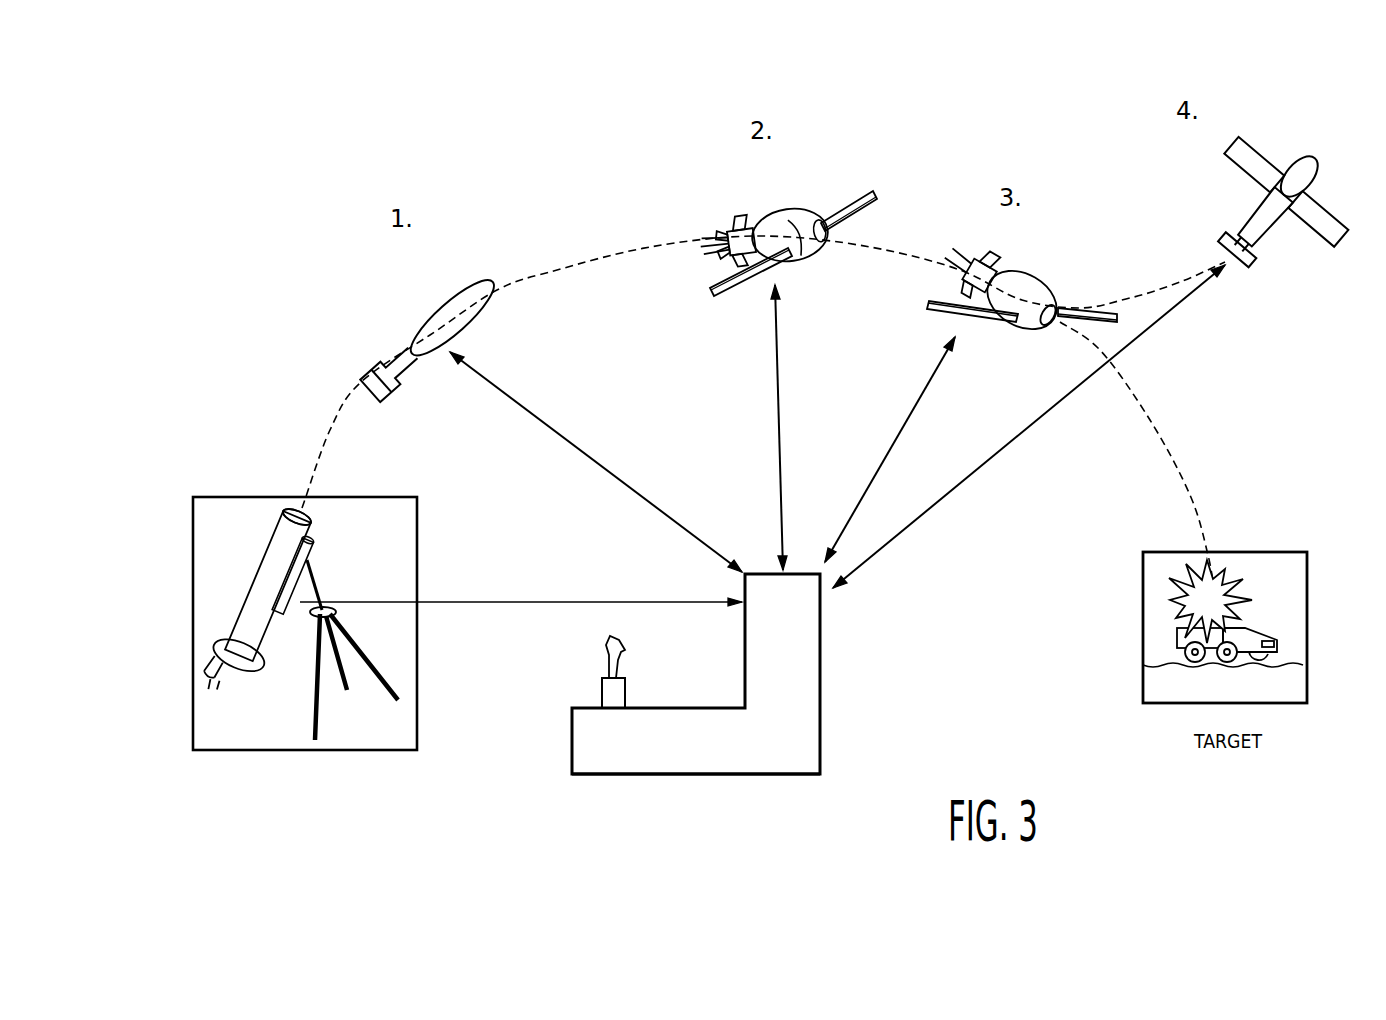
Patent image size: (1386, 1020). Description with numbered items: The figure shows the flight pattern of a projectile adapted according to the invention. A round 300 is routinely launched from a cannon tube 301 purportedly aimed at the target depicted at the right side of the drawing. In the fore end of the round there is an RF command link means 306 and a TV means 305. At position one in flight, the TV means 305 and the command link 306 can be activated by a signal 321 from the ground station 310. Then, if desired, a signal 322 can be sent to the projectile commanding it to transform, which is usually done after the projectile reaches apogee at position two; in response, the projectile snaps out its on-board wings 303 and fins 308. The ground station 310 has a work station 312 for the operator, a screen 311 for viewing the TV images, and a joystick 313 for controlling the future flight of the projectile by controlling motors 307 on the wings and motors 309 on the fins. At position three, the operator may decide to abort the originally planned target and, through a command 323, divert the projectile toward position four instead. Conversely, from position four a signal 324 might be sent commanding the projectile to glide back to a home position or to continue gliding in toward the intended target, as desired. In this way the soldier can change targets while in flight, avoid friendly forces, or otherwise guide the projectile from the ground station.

The round 300 is at (277, 543).
The cannon tube 301 is at (255, 673).
The wings 303 is at (868, 198).
The TV means 305 is at (308, 522).
The RF command link means 306 is at (308, 552).
The motors on the wings 307 is at (823, 228).
The fins 308 is at (738, 212).
The motors on the fins 309 is at (715, 238).
The ground station 310 is at (553, 652).
The screen 311 is at (802, 648).
The work station 312 is at (692, 758).
The joystick 313 is at (600, 692).
The signal 321 is at (563, 432).
The signal 322 is at (778, 432).
The command 323 is at (910, 420).
The signal 324 is at (1008, 448).